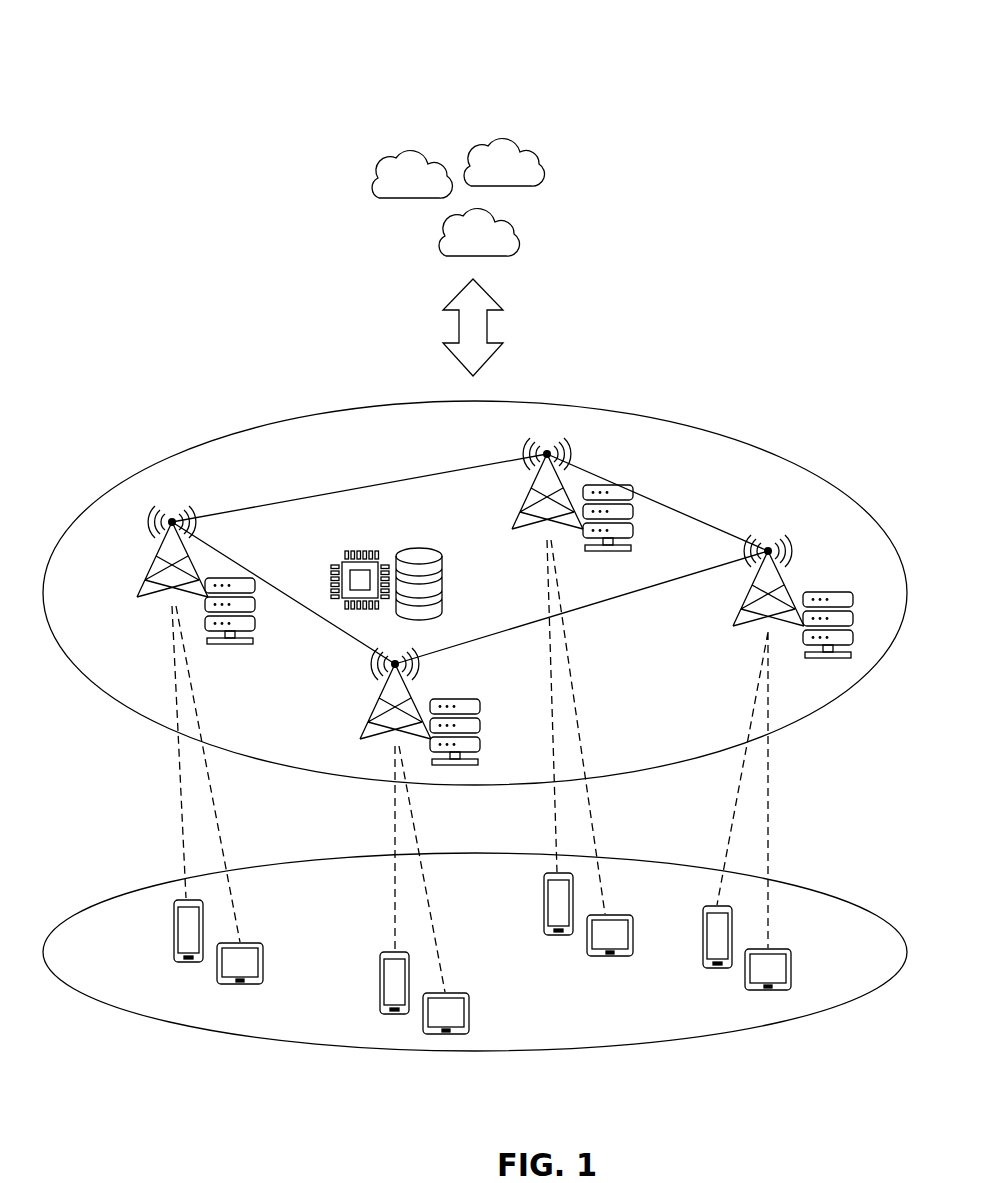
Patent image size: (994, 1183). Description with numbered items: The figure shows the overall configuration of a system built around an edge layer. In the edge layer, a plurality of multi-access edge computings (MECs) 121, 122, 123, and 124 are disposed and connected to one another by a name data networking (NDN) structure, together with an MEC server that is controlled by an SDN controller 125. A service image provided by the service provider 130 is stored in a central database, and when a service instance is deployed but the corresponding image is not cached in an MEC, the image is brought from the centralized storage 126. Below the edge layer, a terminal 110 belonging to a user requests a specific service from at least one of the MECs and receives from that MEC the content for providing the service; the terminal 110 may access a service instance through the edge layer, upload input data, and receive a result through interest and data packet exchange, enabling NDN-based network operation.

The terminal 110 is at (187, 964).
The multi-access edge computing 121 is at (153, 521).
The multi-access edge computing 122 is at (566, 452).
The multi-access edge computing 123 is at (372, 738).
The multi-access edge computing 124 is at (792, 543).
The SDN controller 125 is at (307, 515).
The centralized storage 126 is at (457, 517).
The service provider 130 is at (474, 85).